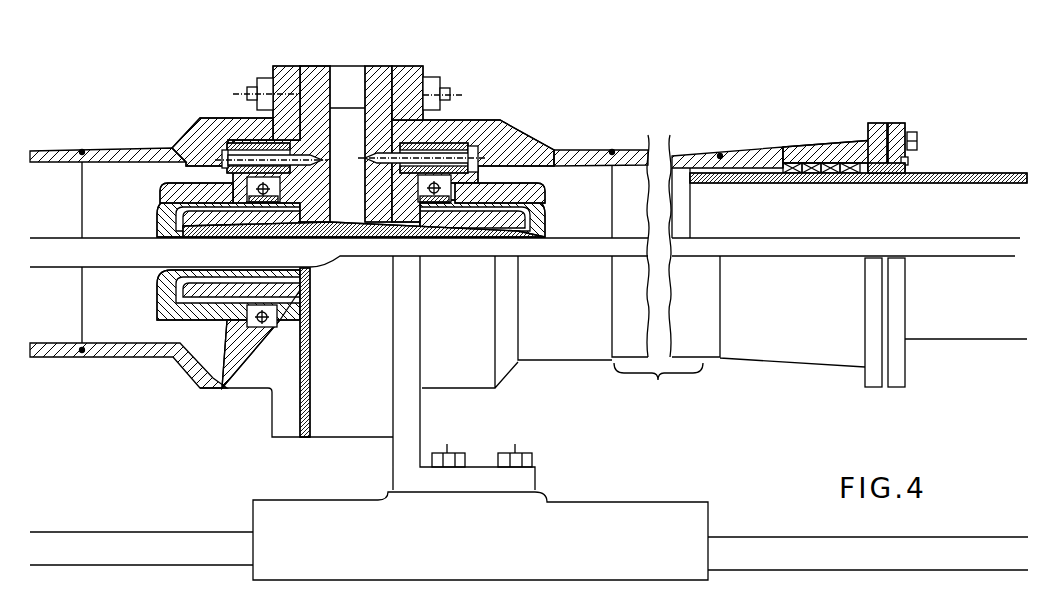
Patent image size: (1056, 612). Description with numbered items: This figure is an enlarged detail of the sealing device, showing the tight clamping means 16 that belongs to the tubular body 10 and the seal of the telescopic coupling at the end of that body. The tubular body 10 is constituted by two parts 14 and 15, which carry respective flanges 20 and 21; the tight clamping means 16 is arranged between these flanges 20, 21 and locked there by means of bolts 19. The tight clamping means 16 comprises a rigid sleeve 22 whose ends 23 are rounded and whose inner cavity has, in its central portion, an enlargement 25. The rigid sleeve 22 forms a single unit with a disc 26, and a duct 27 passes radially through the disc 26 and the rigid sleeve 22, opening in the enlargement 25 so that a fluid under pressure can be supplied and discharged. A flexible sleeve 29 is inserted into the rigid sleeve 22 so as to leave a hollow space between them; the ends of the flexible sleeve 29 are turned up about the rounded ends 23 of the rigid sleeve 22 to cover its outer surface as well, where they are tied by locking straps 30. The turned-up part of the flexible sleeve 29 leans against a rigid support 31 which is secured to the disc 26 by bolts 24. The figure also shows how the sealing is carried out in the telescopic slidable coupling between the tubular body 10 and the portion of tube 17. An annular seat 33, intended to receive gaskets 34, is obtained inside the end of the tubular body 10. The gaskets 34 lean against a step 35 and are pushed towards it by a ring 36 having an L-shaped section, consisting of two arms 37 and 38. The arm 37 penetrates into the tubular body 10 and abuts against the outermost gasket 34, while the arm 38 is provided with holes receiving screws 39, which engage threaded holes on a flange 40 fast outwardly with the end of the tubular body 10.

The tubular body 10 is at (690, 157).
The part of the tubular body 14 is at (507, 147).
The part of the tubular body 15 is at (200, 133).
The tight clamping means 16 is at (378, 118).
The portion of tube 17 is at (958, 183).
The bolts 19 is at (433, 82).
The flange 20 is at (402, 80).
The flange 21 is at (280, 78).
The rigid sleeve 22 is at (435, 200).
The ends of the rigid sleeve 23 is at (542, 217).
The bolts 24 is at (248, 177).
The enlargement of the inner cavity 25 is at (355, 226).
The disc 26 is at (313, 100).
The duct 27 is at (358, 150).
The flexible sleeve 29 is at (498, 237).
The locking straps 30 is at (452, 178).
The rigid support 31 is at (510, 192).
The annular seat 33 is at (808, 157).
The gaskets 34 is at (853, 165).
The step 35 is at (783, 165).
The ring 36 is at (908, 160).
The arm 37 is at (885, 175).
The arm 38 is at (897, 128).
The screws 39 is at (915, 133).
The flange 40 is at (874, 127).